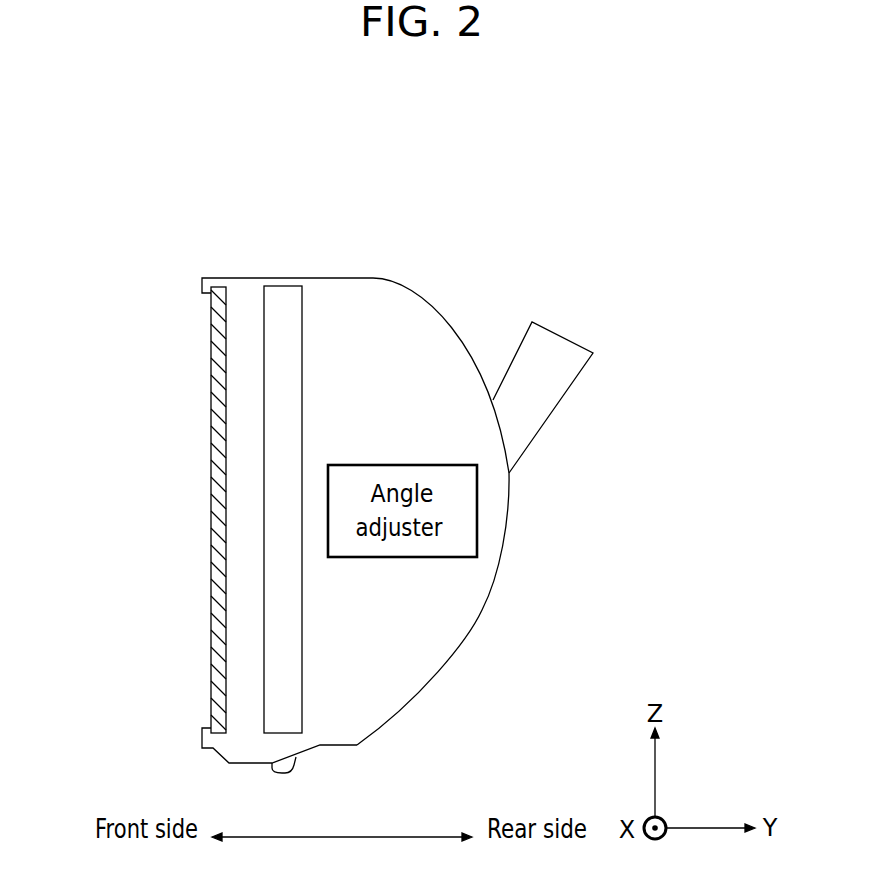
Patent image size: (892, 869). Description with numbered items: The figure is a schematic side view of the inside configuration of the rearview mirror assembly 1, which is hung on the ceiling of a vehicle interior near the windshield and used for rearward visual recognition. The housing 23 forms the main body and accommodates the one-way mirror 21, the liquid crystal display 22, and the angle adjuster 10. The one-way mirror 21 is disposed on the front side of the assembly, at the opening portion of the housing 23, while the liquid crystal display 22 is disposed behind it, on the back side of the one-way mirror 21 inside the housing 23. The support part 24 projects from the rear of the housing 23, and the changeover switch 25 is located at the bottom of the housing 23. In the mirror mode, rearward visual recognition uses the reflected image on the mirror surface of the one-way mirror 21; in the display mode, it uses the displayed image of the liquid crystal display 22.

The rearview mirror assembly 1 is at (375, 260).
The angle adjuster 10 is at (392, 513).
The one-way mirror 21 is at (211, 555).
The liquid crystal display 22 is at (303, 322).
The housing 23 is at (452, 332).
The support part 24 is at (563, 352).
The changeover switch 25 is at (294, 762).